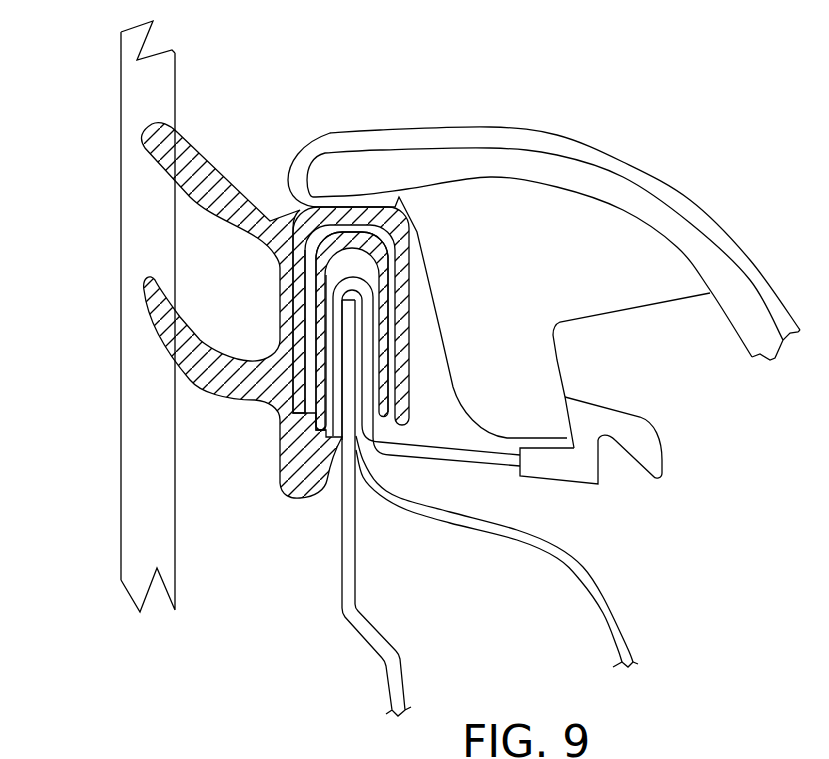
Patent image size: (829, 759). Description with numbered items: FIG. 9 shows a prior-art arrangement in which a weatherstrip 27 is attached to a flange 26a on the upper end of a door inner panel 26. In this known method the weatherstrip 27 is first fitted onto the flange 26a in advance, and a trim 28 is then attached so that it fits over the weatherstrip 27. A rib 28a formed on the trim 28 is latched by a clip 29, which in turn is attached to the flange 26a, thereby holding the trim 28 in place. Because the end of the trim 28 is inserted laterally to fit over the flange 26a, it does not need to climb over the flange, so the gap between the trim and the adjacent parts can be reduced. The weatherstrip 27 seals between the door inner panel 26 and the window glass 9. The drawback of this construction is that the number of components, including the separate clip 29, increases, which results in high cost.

The window glass 9 is at (135, 510).
The inner panel 26 is at (340, 583).
The flange 26a is at (357, 353).
The weatherstrip 27 is at (280, 305).
The trim 28 is at (445, 138).
The rib 28a is at (613, 292).
The clip 29 is at (573, 470).